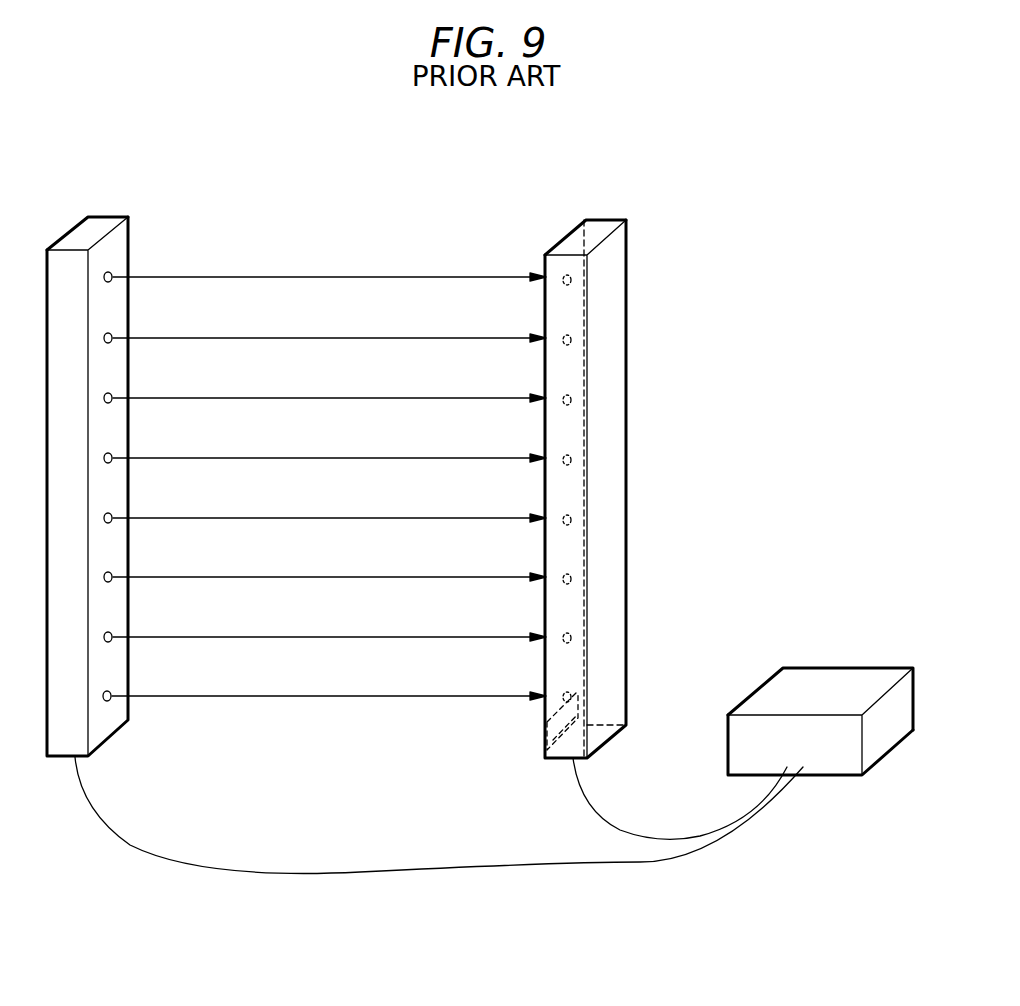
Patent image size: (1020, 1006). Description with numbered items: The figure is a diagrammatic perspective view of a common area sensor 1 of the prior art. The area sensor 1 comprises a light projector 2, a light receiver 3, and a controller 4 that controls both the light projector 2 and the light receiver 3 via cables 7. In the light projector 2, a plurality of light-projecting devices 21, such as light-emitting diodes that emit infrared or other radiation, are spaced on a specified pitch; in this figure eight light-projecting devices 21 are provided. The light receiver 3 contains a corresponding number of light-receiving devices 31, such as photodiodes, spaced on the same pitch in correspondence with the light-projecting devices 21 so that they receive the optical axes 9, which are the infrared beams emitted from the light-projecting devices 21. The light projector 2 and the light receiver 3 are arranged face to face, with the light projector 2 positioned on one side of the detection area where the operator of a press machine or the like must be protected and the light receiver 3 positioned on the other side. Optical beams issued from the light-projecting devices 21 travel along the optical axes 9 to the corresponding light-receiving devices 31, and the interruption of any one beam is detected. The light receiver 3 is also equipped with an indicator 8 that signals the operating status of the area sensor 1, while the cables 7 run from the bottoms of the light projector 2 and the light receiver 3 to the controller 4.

The area sensor 1 is at (648, 323).
The light projector 2 is at (107, 196).
The light-projecting devices 21 is at (110, 333).
The light receiver 3 is at (634, 209).
The light-receiving devices 31 is at (563, 268).
The controller 4 is at (820, 677).
The cables 7 is at (700, 832).
The indicator 8 is at (543, 728).
The optical axes 9 is at (253, 271).